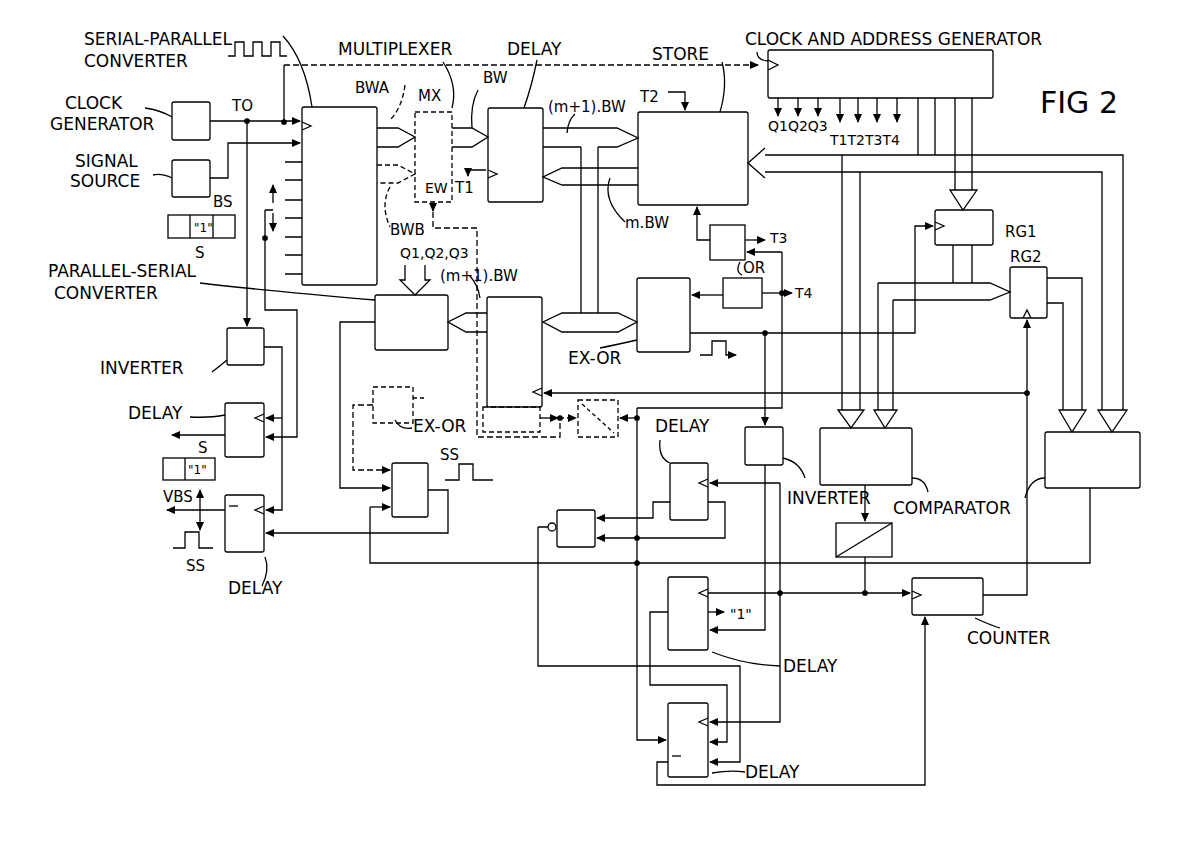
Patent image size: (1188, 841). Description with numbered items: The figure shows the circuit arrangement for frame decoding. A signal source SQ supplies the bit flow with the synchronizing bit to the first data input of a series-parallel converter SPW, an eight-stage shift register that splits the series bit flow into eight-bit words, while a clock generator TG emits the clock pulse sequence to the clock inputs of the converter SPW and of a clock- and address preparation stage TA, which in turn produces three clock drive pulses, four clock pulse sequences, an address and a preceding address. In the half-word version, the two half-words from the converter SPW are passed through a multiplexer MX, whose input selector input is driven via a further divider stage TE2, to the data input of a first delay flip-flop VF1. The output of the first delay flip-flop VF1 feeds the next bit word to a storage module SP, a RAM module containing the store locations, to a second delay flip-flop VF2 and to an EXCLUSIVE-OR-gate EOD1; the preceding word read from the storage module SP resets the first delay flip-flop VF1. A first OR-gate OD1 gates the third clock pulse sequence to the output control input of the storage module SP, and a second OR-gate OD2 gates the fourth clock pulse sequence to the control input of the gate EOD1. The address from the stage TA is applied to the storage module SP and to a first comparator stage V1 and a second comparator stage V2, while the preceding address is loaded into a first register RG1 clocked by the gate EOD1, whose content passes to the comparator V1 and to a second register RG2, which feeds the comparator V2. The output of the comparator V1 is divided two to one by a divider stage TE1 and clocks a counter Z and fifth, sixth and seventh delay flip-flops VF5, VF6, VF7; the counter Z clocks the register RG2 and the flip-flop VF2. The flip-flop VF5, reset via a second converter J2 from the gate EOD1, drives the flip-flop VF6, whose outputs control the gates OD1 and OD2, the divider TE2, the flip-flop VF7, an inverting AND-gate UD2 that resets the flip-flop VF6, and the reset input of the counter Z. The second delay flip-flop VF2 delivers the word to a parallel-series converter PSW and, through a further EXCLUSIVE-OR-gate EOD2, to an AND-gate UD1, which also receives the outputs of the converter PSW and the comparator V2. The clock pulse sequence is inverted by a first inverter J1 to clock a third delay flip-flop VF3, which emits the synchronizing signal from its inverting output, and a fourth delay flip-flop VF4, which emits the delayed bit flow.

The clock generator TG is at (191, 121).
The signal source SQ is at (191, 178).
The series-parallel converter SPW is at (339, 196).
The multiplexer MX is at (433, 151).
The first delay flip-flop VF1 is at (515, 155).
The storage module SP is at (693, 158).
The clock- and address preparation stage TA is at (880, 74).
The first OR-gate OD1 is at (738, 228).
The second OR-gate OD2 is at (725, 280).
The EXCLUSIVE-OR-gate EOD1 is at (663, 327).
The further EXCLUSIVE-OR-gate EOD2 is at (413, 395).
The parallel-series converter PSW is at (411, 322).
The second delay flip-flop VF2 is at (512, 364).
The AND-gate UD1 is at (410, 480).
The inverting AND-gate UD2 is at (576, 518).
The further divider stage TE2 is at (598, 429).
The seventh delay flip-flop VF7 is at (689, 481).
The first inverter J1 is at (245, 346).
The second converter J2 is at (764, 446).
The fourth delay flip-flop VF4 is at (244, 420).
The third delay flip-flop VF3 is at (244, 535).
The first comparator stage V1 is at (884, 456).
The second comparator stage V2 is at (1108, 460).
The divider stage TE1 is at (881, 540).
The counter Z is at (947, 596).
The first register RG1 is at (971, 227).
The second register RG2 is at (1028, 289).
The fifth delay flip-flop VF5 is at (712, 650).
The sixth delay flip-flop VF6 is at (662, 762).